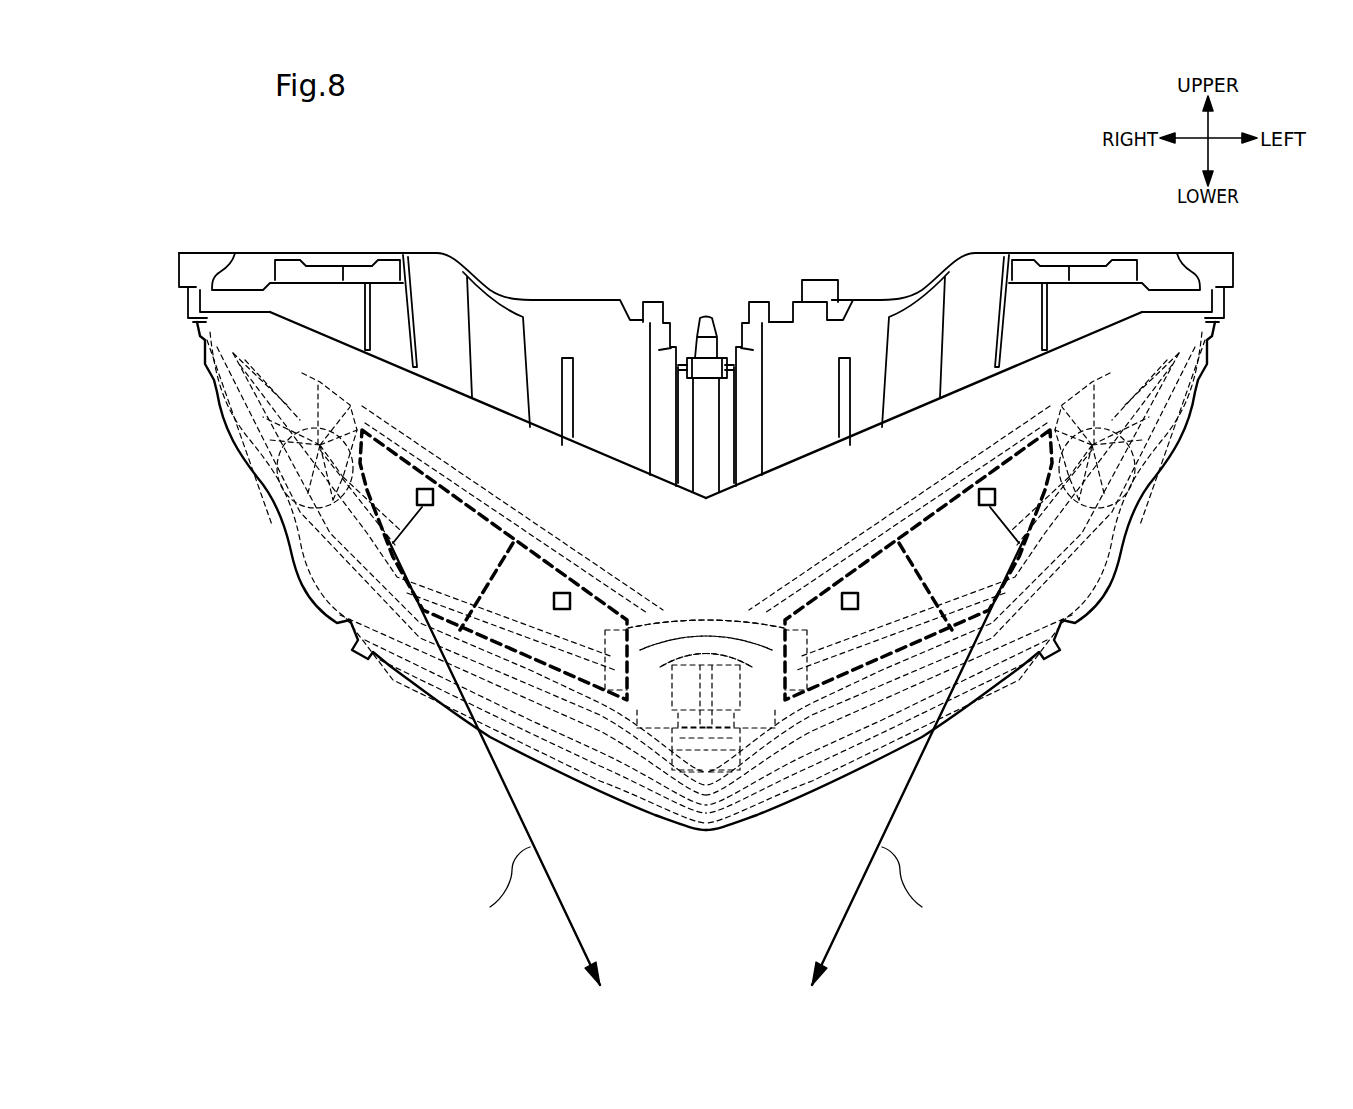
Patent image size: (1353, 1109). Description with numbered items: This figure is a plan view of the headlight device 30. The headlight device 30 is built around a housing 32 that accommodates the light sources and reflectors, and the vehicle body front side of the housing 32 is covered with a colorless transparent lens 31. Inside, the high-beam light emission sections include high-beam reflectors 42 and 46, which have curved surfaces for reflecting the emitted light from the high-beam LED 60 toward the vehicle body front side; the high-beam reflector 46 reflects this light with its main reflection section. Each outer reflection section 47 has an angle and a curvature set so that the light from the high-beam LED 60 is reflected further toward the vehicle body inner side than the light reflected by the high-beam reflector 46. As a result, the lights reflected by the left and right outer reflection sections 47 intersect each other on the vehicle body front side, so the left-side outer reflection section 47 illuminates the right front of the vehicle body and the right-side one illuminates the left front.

The headlight device 30 is at (348, 700).
The lens 31 is at (300, 510).
The housing 32 is at (174, 271).
The high-beam reflector 42 is at (597, 657).
The high-beam reflector 46 is at (392, 468).
The outer reflection section 47 is at (380, 535).
The high-beam LED 60 is at (425, 489).